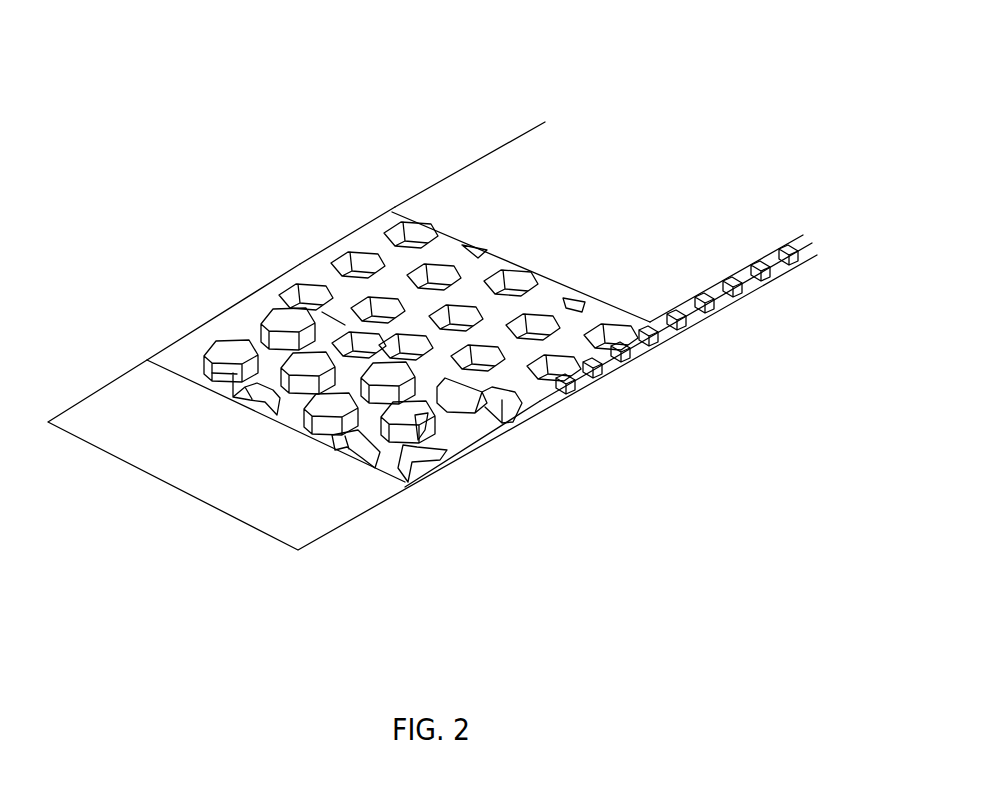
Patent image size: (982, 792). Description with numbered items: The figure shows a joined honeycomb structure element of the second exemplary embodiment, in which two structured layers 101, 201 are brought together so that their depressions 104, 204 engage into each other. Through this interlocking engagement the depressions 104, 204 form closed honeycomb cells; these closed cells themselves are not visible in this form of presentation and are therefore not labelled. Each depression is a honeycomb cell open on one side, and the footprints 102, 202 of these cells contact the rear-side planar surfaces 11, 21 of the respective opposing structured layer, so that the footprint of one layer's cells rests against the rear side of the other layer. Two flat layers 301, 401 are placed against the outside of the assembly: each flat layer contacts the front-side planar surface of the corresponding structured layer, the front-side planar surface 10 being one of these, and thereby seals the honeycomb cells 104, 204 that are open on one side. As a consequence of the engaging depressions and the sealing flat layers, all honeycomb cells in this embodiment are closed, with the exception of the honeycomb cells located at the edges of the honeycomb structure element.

The front-side planar surface 10 is at (450, 257).
The rear-side planar surface 11 is at (539, 400).
The rear-side planar surface 21 is at (181, 363).
The structured layer 101 is at (362, 230).
The footprint 102 is at (590, 383).
The depression 104 is at (617, 342).
The structured layer 201 is at (242, 316).
The footprint 202 is at (427, 413).
The depression 204 is at (255, 393).
The flat layer 301 is at (500, 147).
The flat layer 401 is at (363, 513).